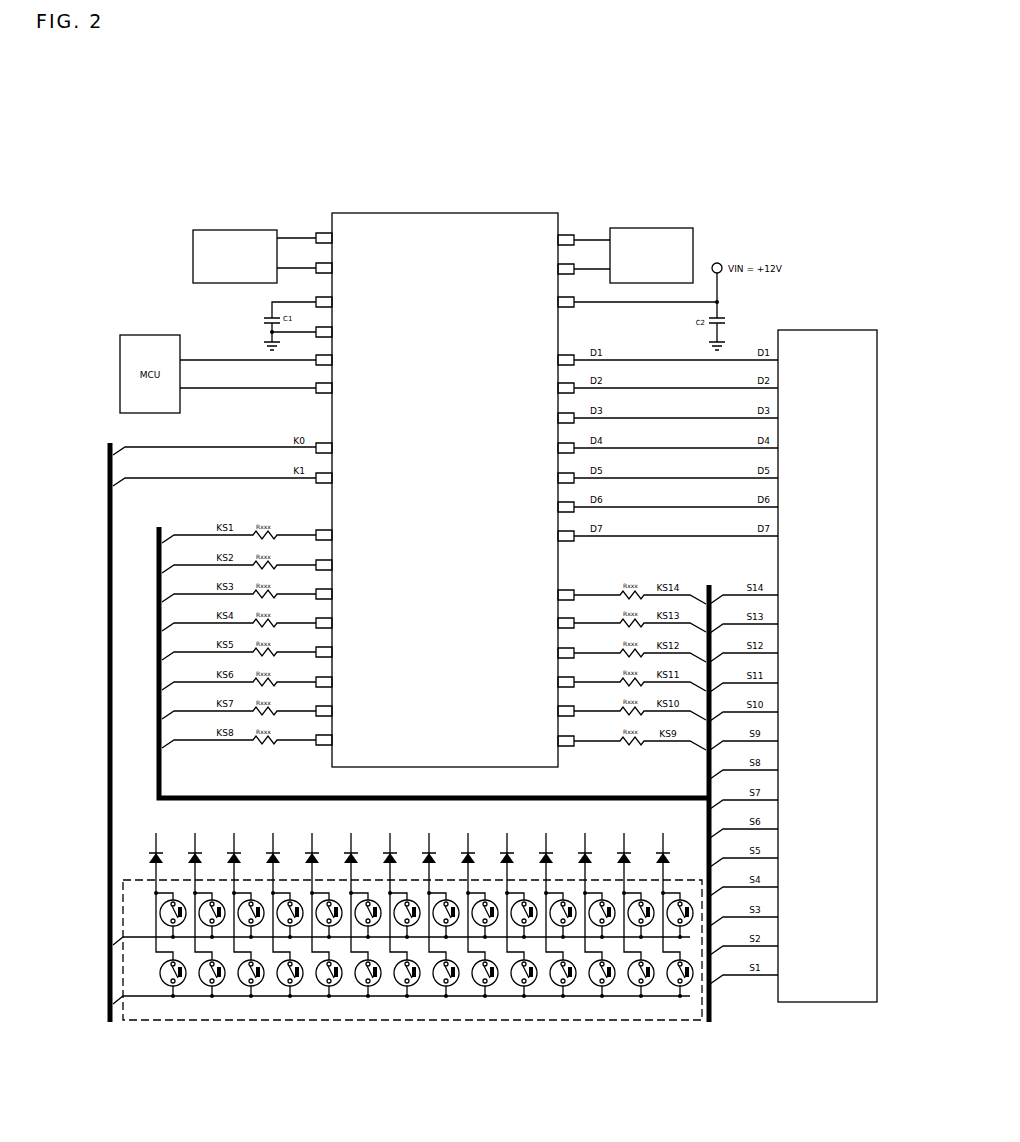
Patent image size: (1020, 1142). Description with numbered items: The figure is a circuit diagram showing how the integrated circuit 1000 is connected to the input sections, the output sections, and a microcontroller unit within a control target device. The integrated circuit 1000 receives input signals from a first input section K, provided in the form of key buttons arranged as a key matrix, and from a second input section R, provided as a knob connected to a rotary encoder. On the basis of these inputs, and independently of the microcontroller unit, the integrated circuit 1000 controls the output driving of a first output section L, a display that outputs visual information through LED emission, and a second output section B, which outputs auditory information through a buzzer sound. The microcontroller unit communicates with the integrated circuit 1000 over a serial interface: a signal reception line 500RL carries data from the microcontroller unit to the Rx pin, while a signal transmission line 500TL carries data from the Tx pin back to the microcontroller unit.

The integrated circuit 1000 is at (441, 214).
The second input section R is at (232, 229).
The second output section B is at (627, 228).
The signal reception line 500RL is at (200, 360).
The signal transmission line 500TL is at (236, 388).
The first input section K is at (552, 1022).
The first output section L is at (833, 1002).